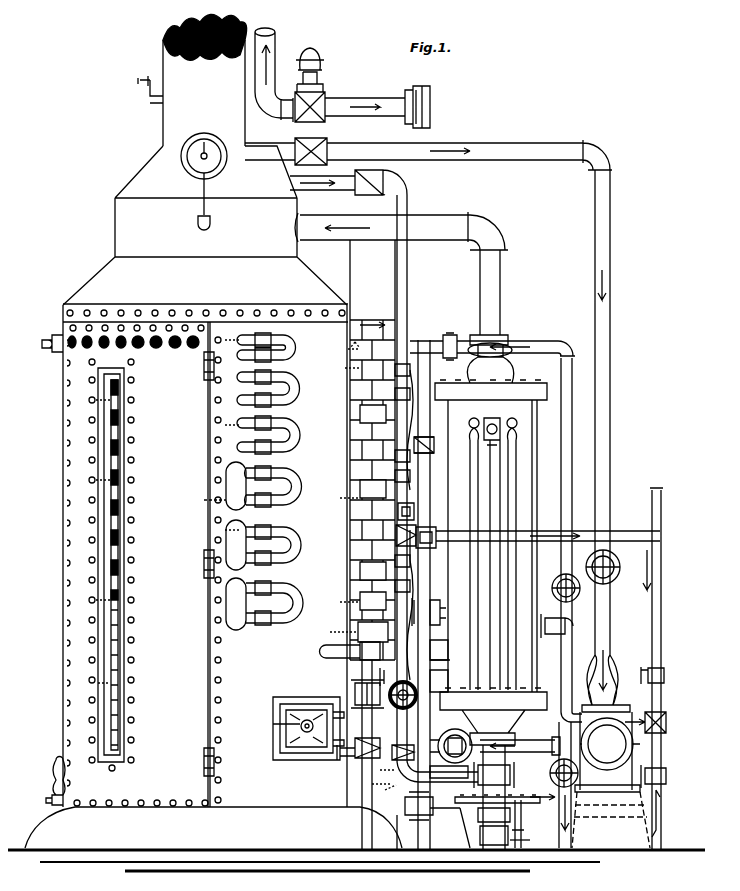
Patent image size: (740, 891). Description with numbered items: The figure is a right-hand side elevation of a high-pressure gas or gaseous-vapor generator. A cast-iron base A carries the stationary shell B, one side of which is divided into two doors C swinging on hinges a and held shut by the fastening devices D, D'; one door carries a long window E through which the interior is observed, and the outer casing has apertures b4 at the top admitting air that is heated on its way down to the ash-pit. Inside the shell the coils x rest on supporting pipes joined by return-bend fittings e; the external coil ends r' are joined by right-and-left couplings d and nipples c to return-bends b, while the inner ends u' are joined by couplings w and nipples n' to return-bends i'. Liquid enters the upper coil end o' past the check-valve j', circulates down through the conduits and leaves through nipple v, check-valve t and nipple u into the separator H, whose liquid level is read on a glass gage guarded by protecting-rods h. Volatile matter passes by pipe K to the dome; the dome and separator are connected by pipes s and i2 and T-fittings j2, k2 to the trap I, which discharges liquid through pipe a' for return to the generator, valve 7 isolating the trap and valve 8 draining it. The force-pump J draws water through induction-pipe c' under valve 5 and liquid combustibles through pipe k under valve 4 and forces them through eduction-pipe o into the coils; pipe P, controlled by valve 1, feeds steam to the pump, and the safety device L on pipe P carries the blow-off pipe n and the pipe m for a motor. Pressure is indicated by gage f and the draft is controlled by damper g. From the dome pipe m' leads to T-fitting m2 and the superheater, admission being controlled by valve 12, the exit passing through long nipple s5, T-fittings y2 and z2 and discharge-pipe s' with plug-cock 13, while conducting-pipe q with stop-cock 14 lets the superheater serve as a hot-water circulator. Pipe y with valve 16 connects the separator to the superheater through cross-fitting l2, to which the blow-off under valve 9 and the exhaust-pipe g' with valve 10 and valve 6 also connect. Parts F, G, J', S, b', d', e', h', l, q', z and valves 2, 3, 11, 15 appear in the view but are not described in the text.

The base A is at (356, 839).
The stationary portion of the shell B is at (205, 555).
The doors C is at (144, 564).
The fastening device D is at (50, 781).
The fastening device D' is at (42, 343).
The window E is at (125, 565).
The furnace door F is at (308, 739).
The pipe G is at (336, 662).
The separator H is at (492, 517).
The trap I is at (450, 828).
The force-pump J is at (607, 723).
The pump base J' is at (611, 820).
The pipe K is at (410, 278).
The safety device L is at (322, 85).
The pipe P is at (294, 151).
The pipe S is at (437, 777).
The hinges a is at (200, 564).
The discharge-pipe a' is at (543, 791).
The return-bends b is at (278, 479).
The pipe b' is at (558, 785).
The apertures b4 is at (133, 348).
The nipples c is at (271, 483).
The induction-pipe c' is at (645, 713).
The right and left couplings d is at (258, 483).
The rivets d' is at (104, 565).
The return-bend fittings e is at (219, 546).
The rivet e' is at (96, 683).
The gage f is at (297, 294).
The damper g is at (145, 89).
The exhaust-pipe g' is at (520, 749).
The protecting-rods h is at (491, 554).
The pipe h' is at (385, 759).
The return-bends i' is at (411, 523).
The pipe i2 is at (499, 797).
The check-valve j' is at (450, 339).
The T-fitting j2 is at (498, 775).
The pipe k is at (648, 693).
The T-fitting k2 is at (497, 820).
The pipe l is at (434, 422).
The cross-fitting l2 is at (378, 777).
The pipe m is at (377, 104).
The pipe m' is at (348, 235).
The T-fitting m2 is at (356, 759).
The blow-off pipe n is at (274, 75).
The nipples n' is at (391, 478).
The eduction-pipe o is at (496, 531).
The end of the upper coil o' is at (343, 348).
The conducting-pipe q is at (407, 477).
The pipe q' is at (384, 791).
The ends of the external turns r' is at (229, 435).
The pipe s is at (429, 595).
The discharge-pipe s' is at (549, 669).
The long nipple s5 is at (418, 609).
The check-valve t is at (438, 612).
The nipple u is at (387, 510).
The inner ends u' is at (342, 548).
The nipple v is at (335, 631).
The right and left couplings w is at (372, 450).
The conduits or coils x is at (370, 651).
The pipe y is at (440, 676).
The T-fitting y2 is at (384, 671).
The pipe z is at (400, 832).
The T-fitting z2 is at (406, 531).
The valve 1 is at (610, 567).
The valve 2 is at (572, 590).
The valve 3 is at (557, 619).
The valve 4 is at (650, 667).
The valve 5 is at (651, 778).
The valve 6 is at (570, 773).
The valve 7 is at (522, 824).
The valve 8 is at (522, 840).
The valve 9 is at (427, 806).
The valve 10 is at (451, 739).
The valve 11 is at (401, 703).
The valve 12 is at (367, 694).
The plug-cock 13 is at (435, 543).
The stop-cock 14 is at (415, 510).
The valve 15 is at (410, 760).
The valve 16 is at (377, 743).